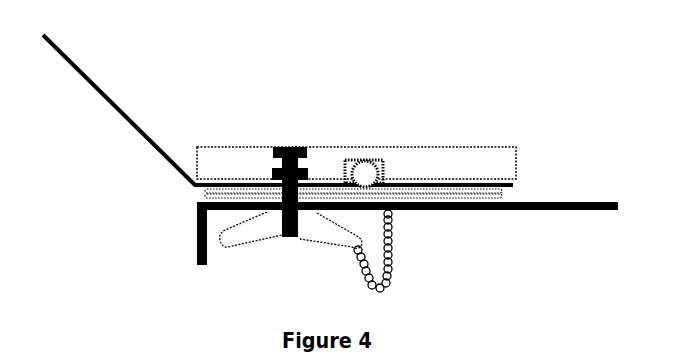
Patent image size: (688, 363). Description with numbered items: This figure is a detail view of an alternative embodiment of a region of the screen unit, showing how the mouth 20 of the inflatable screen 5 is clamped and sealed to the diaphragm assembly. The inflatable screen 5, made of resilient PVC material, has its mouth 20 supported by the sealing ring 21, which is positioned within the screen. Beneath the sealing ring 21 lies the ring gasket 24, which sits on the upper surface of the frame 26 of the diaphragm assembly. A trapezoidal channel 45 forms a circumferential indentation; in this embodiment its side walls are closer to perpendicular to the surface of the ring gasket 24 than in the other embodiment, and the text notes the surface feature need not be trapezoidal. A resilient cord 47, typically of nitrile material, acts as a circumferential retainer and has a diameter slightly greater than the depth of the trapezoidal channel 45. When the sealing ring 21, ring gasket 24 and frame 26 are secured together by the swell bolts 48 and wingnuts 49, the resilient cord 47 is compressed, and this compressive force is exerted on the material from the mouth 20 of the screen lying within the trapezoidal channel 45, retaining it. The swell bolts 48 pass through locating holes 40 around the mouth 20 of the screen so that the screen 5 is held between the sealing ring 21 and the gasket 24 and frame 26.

The inflatable screen 5 is at (88, 72).
The sealing ring 21 is at (222, 153).
The locating holes 40 is at (312, 168).
The swell bolts 48 is at (281, 147).
The trapezoidal channel 45 is at (364, 172).
The resilient cord 47 is at (367, 173).
The ring gasket 24 is at (425, 193).
The mouth 20 is at (465, 189).
The frame 26 is at (548, 210).
The wingnuts 49 is at (245, 233).